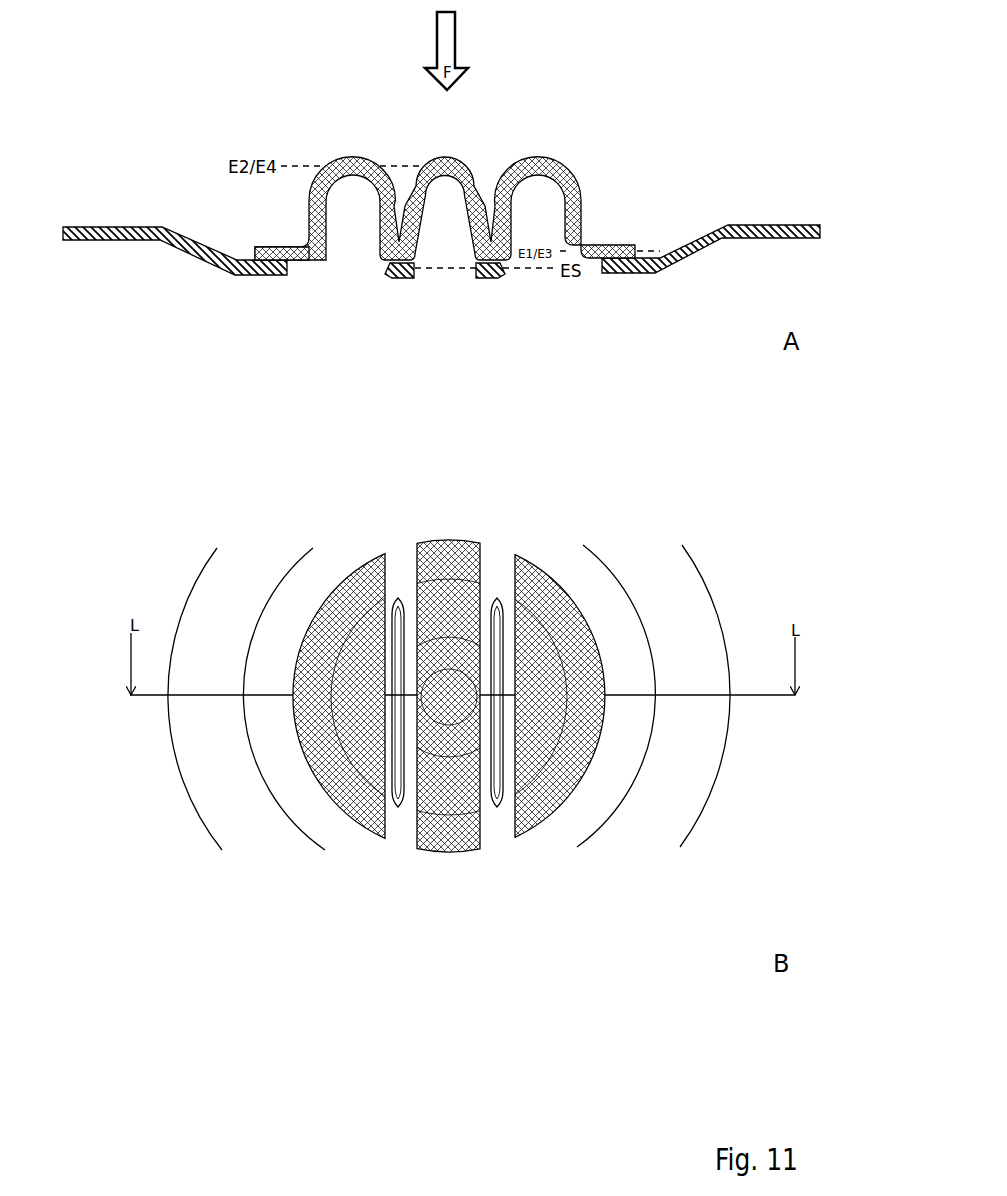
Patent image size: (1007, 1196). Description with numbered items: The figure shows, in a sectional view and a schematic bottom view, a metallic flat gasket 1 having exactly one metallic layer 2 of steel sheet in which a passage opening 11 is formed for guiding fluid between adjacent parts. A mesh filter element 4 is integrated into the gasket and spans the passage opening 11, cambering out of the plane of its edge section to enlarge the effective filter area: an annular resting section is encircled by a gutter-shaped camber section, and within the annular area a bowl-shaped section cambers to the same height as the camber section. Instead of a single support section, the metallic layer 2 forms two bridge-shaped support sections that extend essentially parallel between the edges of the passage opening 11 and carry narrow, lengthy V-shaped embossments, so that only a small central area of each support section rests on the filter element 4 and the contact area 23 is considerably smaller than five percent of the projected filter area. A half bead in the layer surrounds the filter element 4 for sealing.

The metallic flat gasket 1 is at (160, 197).
The metallic layer 2 is at (760, 237).
The filter element 4 is at (282, 247).
The passage opening 11 is at (362, 280).
The contact area 23 is at (497, 680).